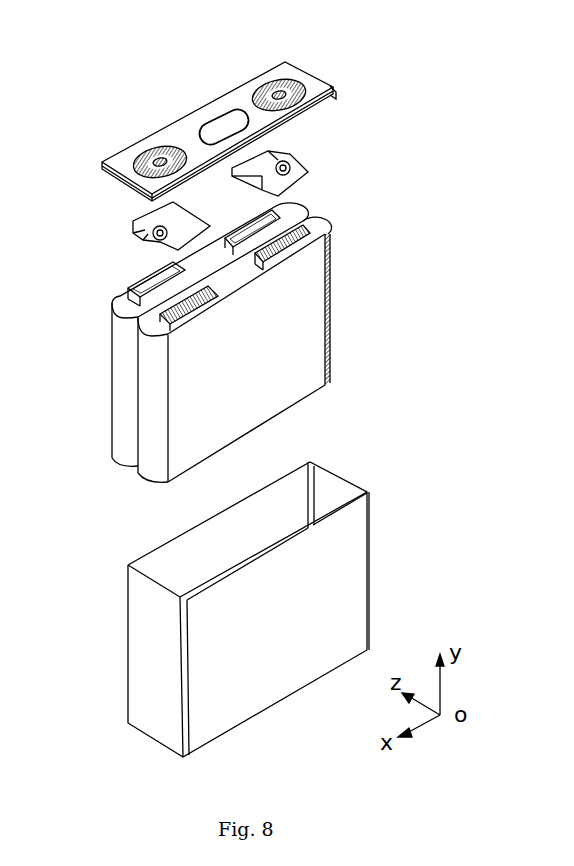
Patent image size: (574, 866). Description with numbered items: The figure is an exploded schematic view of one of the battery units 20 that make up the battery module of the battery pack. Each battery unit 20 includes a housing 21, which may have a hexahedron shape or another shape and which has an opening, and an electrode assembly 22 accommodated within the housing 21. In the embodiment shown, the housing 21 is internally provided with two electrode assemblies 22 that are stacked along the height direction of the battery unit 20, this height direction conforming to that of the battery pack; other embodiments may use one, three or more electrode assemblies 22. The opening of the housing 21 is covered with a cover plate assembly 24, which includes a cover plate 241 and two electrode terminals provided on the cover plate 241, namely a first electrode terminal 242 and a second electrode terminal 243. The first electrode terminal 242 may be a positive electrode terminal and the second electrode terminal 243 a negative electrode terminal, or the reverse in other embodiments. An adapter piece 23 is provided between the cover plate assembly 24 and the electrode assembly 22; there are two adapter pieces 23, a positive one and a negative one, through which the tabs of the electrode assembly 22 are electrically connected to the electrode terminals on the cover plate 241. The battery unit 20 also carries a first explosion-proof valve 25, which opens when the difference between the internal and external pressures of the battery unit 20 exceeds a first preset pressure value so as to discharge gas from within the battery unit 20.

The battery unit 20 is at (372, 325).
The housing 21 is at (340, 575).
The electrode assembly 22 is at (150, 405).
The adapter piece 23 is at (310, 172).
The cover plate assembly 24 is at (324, 86).
The cover plate 241 is at (338, 90).
The first electrode terminal 242 is at (143, 148).
The second electrode terminal 243 is at (278, 82).
The first explosion-proof valve 25 is at (220, 123).